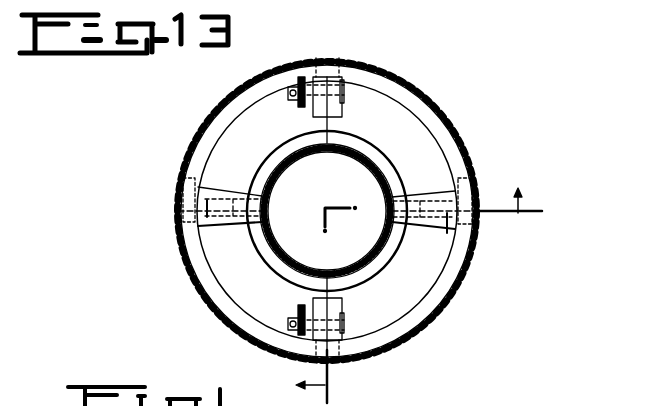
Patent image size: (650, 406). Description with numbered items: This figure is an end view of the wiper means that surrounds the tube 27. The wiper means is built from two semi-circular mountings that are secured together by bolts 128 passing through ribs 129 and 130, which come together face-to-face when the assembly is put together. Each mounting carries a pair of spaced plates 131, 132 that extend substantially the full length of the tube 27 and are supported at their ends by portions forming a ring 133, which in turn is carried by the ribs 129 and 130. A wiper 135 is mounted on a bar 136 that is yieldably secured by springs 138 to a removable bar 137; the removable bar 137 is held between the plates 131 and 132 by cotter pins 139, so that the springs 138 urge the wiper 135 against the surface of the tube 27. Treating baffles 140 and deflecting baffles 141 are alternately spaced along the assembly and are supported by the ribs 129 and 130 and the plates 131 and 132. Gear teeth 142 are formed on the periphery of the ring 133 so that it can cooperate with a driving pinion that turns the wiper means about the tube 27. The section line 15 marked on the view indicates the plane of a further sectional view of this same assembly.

The section line 15- 15 is at (421, 295).
The tube 27 is at (298, 258).
The bolts 128 is at (344, 92).
The rib 129 is at (318, 105).
The rib 130 is at (340, 110).
The plate 131 is at (211, 187).
The plate 132 is at (218, 226).
The ring 133 is at (208, 122).
The wiper 135 is at (268, 195).
The bar 136 is at (267, 227).
The removable bar 137 is at (190, 215).
The springs 138 is at (200, 228).
The cotter pins 139 is at (178, 162).
The treating baffles 140 is at (372, 283).
The deflecting baffles 141 is at (372, 262).
The gear teeth 142 is at (403, 76).